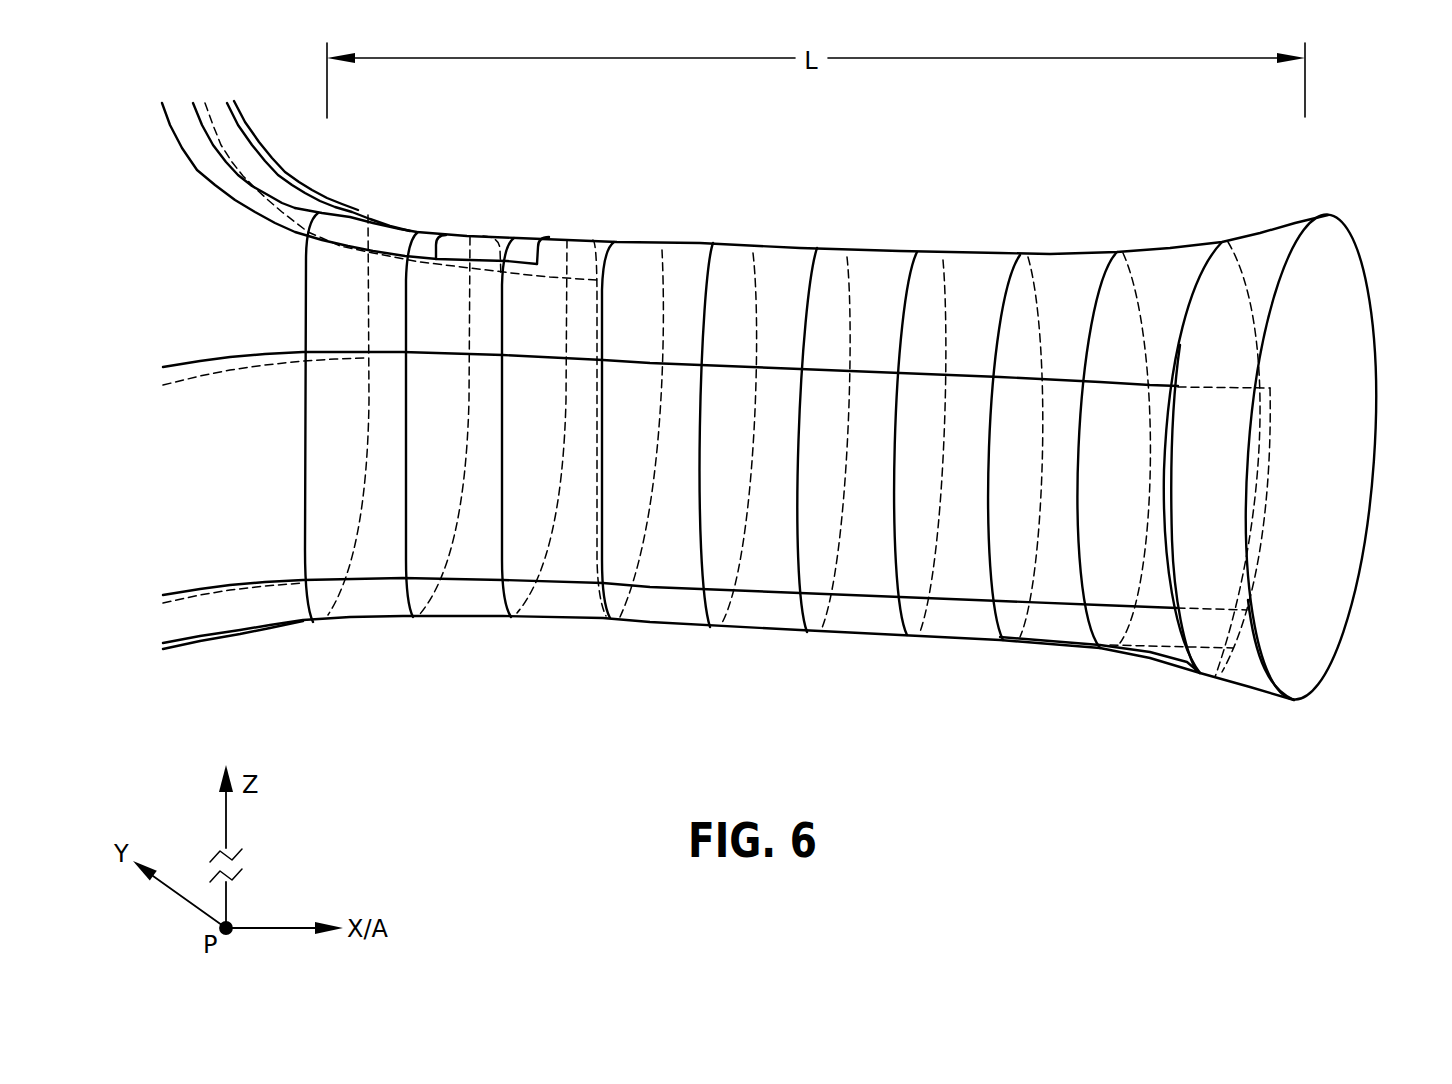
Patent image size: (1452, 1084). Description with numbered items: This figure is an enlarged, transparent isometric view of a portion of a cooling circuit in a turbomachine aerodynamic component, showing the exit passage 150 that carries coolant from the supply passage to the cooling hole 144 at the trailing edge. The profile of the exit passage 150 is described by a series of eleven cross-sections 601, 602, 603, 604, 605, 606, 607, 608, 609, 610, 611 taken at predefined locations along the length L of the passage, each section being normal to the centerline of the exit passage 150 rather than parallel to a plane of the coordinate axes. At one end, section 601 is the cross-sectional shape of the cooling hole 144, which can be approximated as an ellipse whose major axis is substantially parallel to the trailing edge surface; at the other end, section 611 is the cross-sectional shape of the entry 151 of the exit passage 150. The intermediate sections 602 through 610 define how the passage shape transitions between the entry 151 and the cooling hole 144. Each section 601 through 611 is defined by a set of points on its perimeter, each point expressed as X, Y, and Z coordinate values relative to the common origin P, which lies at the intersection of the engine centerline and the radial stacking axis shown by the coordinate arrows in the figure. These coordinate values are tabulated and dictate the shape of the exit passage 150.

The cooling hole 144 is at (1325, 317).
The exit passage 150 is at (885, 179).
The entry 151 is at (337, 165).
The section 601 is at (1268, 693).
The section 602 is at (1182, 664).
The section 603 is at (1103, 650).
The section 604 is at (1003, 641).
The section 605 is at (907, 637).
The section 606 is at (807, 633).
The section 607 is at (708, 628).
The section 608 is at (610, 619).
The section 609 is at (511, 618).
The section 610 is at (413, 618).
The section 611 is at (313, 623).